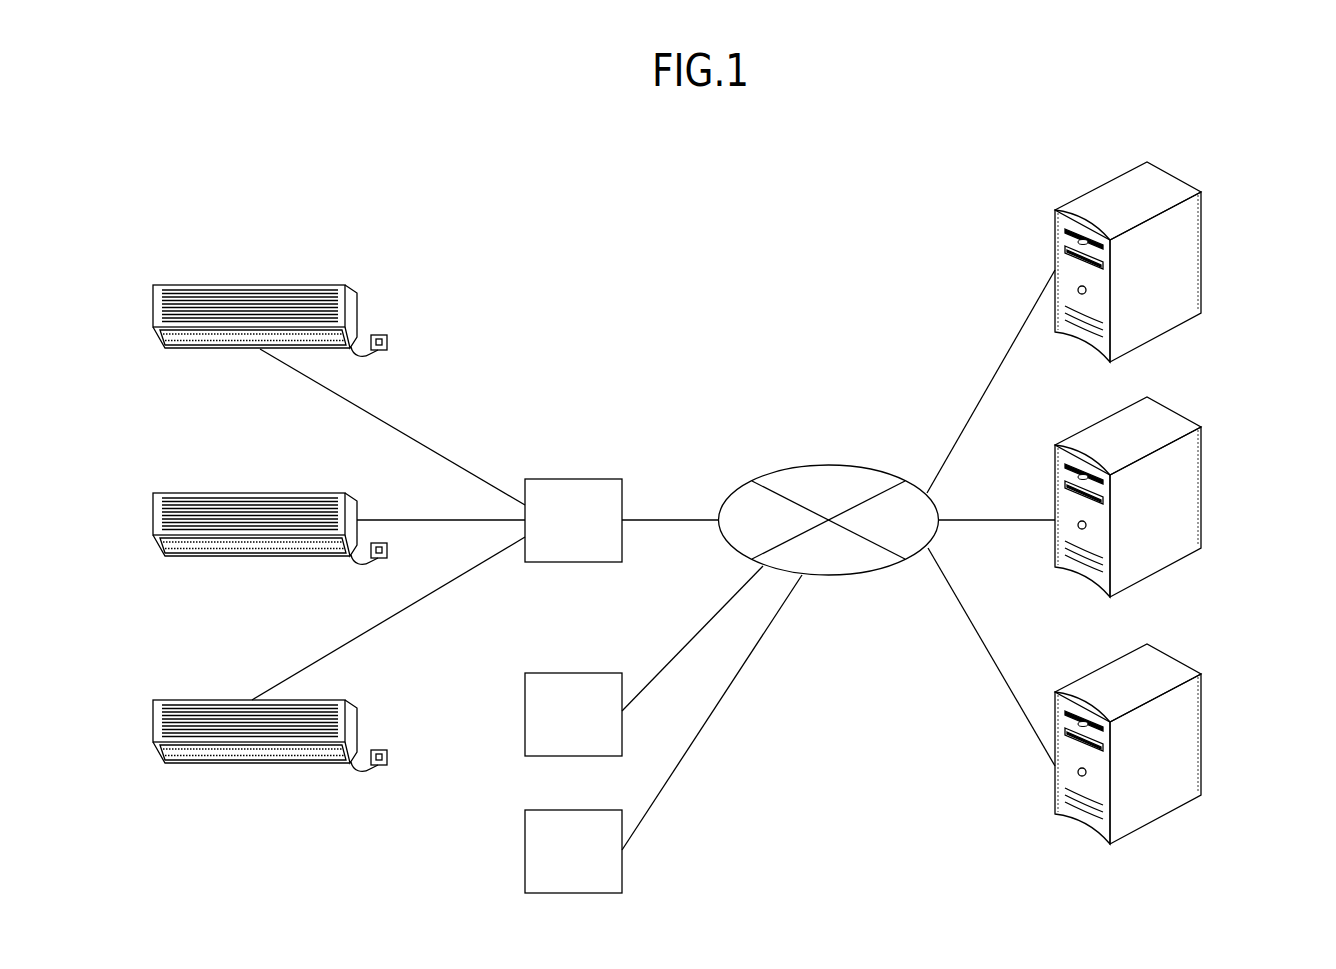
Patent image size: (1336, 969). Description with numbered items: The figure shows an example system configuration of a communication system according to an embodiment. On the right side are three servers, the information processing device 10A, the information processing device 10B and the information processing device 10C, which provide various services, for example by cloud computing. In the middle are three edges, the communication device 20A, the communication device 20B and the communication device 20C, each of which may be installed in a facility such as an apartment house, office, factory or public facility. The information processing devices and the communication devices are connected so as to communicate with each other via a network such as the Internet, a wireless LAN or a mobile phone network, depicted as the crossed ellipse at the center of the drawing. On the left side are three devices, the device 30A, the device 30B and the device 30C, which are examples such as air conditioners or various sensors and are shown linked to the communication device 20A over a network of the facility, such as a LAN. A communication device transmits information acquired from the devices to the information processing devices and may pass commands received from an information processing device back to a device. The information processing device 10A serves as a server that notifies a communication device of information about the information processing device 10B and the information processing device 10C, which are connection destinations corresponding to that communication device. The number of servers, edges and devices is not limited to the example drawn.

The information processing device 10A is at (1170, 175).
The information processing device 10B is at (1170, 410).
The information processing device 10C is at (1170, 657).
The communication device 20A is at (556, 479).
The communication device 20B is at (556, 673).
The communication device 20C is at (556, 810).
The device 30A is at (310, 285).
The device 30B is at (310, 493).
The device 30C is at (310, 700).